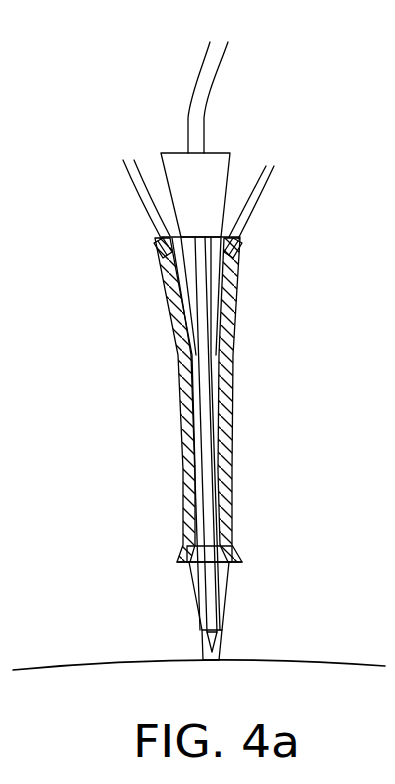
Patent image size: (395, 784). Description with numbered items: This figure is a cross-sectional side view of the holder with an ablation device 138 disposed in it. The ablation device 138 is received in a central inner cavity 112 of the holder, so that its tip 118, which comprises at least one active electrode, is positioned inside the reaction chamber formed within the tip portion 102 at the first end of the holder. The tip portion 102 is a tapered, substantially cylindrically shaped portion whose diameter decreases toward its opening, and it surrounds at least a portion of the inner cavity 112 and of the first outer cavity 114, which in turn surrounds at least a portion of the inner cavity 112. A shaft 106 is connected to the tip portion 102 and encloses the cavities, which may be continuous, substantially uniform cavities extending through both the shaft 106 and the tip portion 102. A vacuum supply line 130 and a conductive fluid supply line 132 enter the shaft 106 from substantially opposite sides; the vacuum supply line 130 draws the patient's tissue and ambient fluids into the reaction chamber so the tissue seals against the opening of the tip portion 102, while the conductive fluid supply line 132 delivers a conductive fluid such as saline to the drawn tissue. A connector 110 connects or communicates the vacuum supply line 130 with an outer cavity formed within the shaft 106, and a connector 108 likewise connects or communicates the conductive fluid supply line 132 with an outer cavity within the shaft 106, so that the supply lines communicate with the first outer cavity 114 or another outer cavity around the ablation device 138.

The tip portion 102 is at (226, 586).
The shaft 106 is at (180, 393).
The connector 108 is at (243, 238).
The connector 110 is at (160, 244).
The inner cavity 112 is at (204, 260).
The first outer cavity 114 is at (233, 546).
The tip 118 is at (201, 635).
The vacuum supply line 130 is at (124, 172).
The conductive fluid supply line 132 is at (263, 188).
The ablation device 138 is at (205, 171).